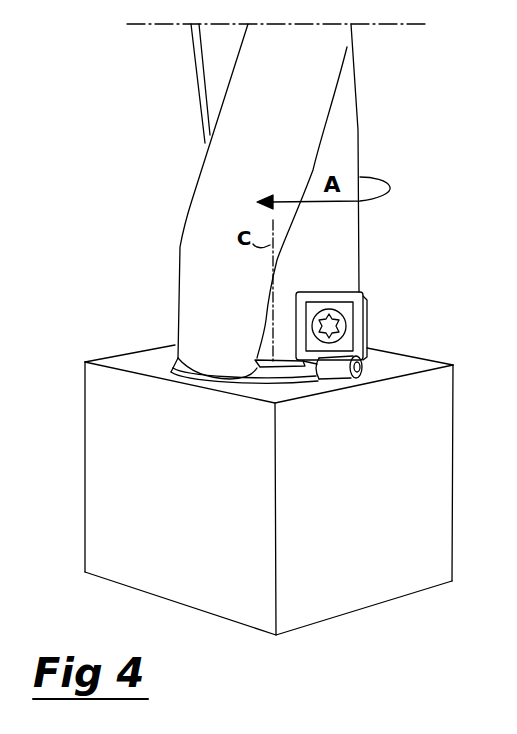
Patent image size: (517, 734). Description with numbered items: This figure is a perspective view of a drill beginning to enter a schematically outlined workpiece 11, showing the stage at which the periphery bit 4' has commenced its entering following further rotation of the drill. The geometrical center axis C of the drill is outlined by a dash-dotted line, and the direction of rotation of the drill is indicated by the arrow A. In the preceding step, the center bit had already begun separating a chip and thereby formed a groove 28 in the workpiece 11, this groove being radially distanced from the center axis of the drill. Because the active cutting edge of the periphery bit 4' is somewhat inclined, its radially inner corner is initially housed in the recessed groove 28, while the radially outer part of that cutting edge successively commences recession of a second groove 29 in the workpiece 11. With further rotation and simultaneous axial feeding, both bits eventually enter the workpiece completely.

The workpiece 11 is at (98, 499).
The groove 28 is at (267, 376).
The second groove 29 is at (305, 378).
The periphery bit 4' is at (348, 311).